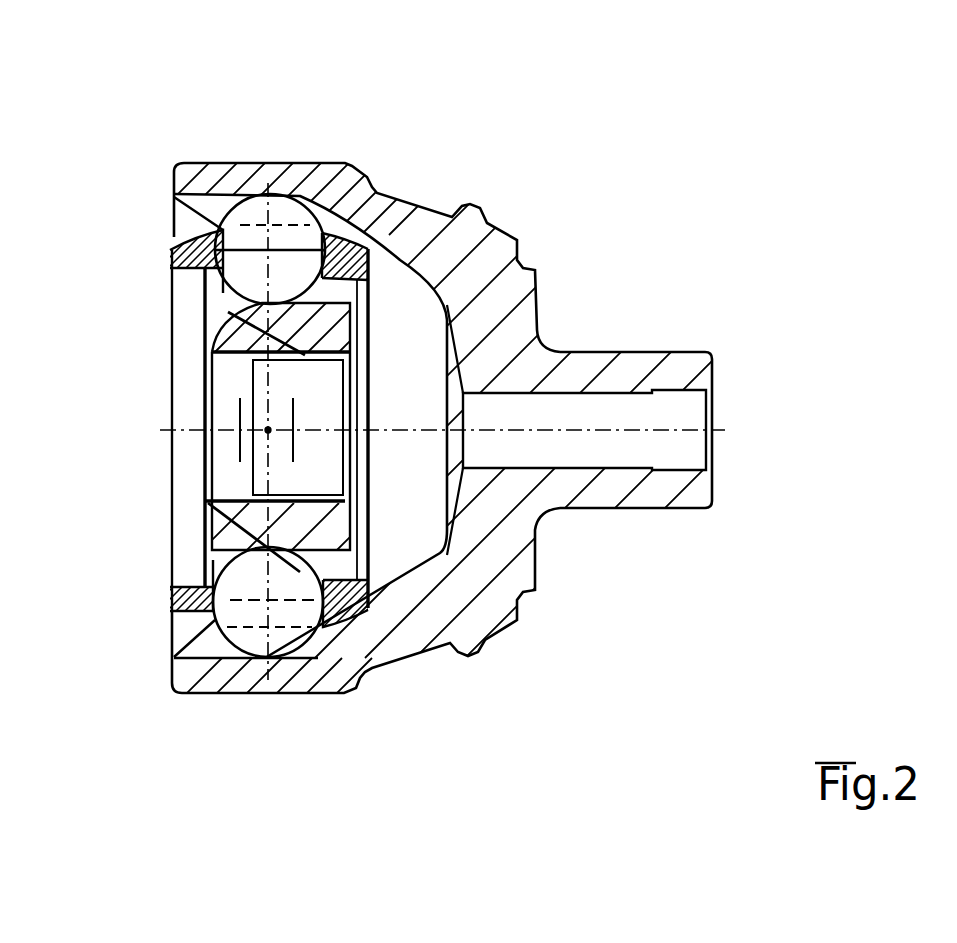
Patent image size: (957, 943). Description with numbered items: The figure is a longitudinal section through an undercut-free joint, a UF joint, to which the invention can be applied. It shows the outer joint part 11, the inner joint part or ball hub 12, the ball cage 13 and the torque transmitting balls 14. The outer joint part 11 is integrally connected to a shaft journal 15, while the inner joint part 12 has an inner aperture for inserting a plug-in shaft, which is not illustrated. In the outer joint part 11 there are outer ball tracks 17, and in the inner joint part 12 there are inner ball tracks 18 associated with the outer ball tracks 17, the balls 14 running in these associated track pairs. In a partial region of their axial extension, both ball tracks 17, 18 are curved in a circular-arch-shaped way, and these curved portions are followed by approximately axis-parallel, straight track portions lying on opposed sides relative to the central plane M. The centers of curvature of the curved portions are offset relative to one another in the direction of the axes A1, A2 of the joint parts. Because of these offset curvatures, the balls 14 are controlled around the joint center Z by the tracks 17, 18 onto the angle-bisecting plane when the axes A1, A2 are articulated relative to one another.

The outer joint part 11 is at (307, 182).
The inner joint part 12 is at (382, 240).
The ball cage 13 is at (353, 235).
The torque transmitting balls 14 is at (252, 215).
The shaft journal 15 is at (595, 352).
The outer ball tracks 17 is at (198, 203).
The inner ball tracks 18 is at (227, 235).
The axis of the outer joint part A1 is at (187, 430).
The axis of the inner joint part A2 is at (677, 432).
The central plane M is at (268, 432).
The joint center Z is at (238, 503).